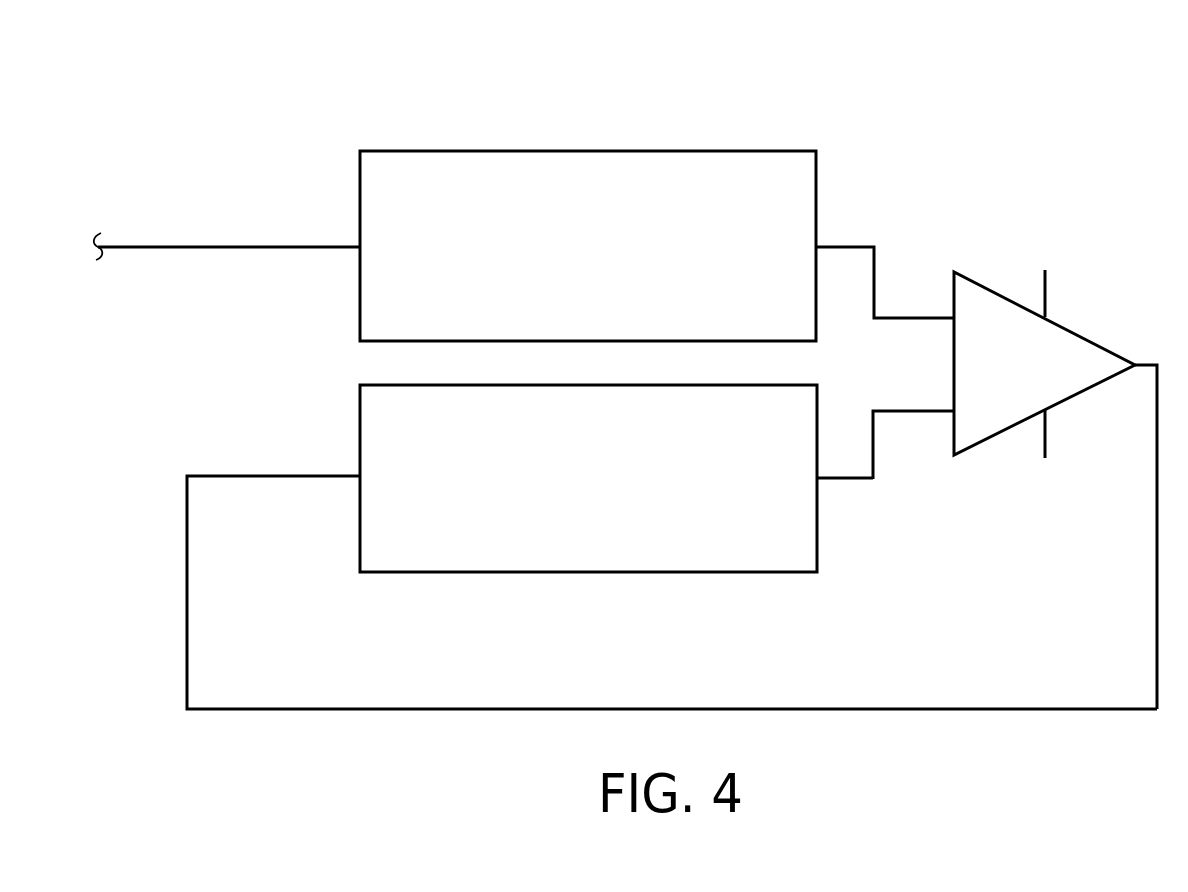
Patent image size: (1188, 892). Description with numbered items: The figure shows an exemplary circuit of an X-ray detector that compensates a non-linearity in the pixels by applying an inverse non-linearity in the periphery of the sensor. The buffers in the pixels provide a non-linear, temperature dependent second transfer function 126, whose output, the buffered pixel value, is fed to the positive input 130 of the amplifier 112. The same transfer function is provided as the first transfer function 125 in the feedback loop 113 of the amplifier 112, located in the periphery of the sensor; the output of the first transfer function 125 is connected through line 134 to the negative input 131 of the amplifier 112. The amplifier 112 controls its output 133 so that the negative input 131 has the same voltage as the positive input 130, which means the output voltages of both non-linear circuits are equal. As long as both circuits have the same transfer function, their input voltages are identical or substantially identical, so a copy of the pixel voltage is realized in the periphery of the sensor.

The second transfer function 126 is at (576, 150).
The first transfer function 125 is at (655, 573).
The positive input 130 is at (928, 317).
The negative input 131 is at (908, 413).
The output line of block 125 134 is at (843, 481).
The amplifier 112 is at (1090, 340).
The output 133 is at (1155, 578).
The feedback loop 113 is at (922, 700).